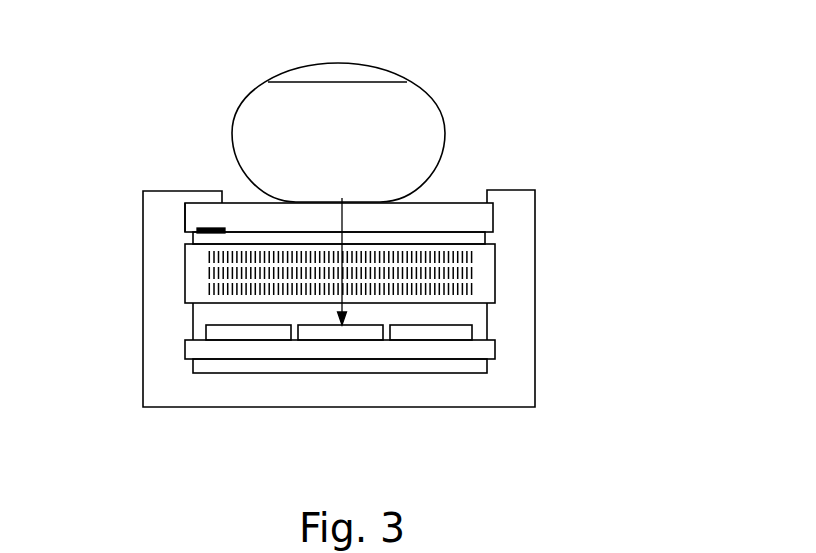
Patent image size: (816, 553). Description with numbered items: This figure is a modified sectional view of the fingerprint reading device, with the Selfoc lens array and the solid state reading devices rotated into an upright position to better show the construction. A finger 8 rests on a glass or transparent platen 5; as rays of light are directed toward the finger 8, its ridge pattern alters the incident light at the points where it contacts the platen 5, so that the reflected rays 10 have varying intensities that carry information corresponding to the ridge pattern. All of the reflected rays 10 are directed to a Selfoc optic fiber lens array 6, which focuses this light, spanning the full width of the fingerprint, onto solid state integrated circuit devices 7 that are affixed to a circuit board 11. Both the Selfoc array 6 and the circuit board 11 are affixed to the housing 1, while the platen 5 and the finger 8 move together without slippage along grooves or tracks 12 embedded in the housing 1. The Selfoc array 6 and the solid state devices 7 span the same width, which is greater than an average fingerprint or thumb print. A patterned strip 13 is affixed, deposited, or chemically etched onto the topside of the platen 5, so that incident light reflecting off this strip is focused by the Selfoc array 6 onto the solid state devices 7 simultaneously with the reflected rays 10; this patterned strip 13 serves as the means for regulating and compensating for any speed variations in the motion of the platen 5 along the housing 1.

The housing 1 is at (384, 337).
The platen 5 is at (360, 185).
The Selfoc optic fiber lens array 6 is at (423, 261).
The solid state integrated circuit devices 7 is at (437, 283).
The finger 8 is at (358, 101).
The reflected rays 10 is at (450, 186).
The circuit board 11 is at (434, 388).
The grooves or tracks 12 is at (124, 243).
The patterned strip 13 is at (168, 180).